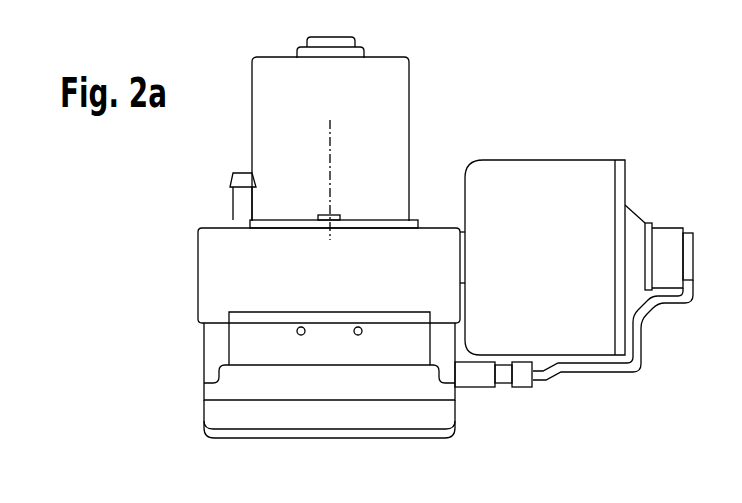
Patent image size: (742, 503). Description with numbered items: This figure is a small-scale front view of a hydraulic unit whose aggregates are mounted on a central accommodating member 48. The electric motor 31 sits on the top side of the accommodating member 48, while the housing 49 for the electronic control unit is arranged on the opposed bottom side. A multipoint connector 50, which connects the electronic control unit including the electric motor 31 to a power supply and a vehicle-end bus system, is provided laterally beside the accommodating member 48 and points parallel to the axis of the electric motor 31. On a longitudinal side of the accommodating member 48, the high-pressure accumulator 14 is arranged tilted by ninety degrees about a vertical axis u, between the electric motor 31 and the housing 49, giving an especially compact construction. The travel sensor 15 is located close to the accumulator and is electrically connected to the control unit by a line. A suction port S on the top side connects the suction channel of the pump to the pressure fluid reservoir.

The high-pressure accumulator 14 is at (583, 172).
The travel sensor 15 is at (667, 237).
The electric motor 31 is at (390, 91).
The accommodating member 48 is at (210, 253).
The housing 49 is at (210, 337).
The multipoint connector 50 is at (237, 357).
The suction port S is at (235, 180).
The vertical axis u is at (328, 155).